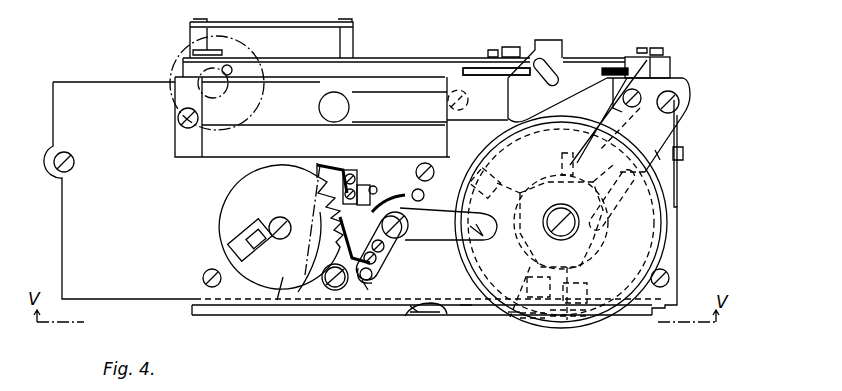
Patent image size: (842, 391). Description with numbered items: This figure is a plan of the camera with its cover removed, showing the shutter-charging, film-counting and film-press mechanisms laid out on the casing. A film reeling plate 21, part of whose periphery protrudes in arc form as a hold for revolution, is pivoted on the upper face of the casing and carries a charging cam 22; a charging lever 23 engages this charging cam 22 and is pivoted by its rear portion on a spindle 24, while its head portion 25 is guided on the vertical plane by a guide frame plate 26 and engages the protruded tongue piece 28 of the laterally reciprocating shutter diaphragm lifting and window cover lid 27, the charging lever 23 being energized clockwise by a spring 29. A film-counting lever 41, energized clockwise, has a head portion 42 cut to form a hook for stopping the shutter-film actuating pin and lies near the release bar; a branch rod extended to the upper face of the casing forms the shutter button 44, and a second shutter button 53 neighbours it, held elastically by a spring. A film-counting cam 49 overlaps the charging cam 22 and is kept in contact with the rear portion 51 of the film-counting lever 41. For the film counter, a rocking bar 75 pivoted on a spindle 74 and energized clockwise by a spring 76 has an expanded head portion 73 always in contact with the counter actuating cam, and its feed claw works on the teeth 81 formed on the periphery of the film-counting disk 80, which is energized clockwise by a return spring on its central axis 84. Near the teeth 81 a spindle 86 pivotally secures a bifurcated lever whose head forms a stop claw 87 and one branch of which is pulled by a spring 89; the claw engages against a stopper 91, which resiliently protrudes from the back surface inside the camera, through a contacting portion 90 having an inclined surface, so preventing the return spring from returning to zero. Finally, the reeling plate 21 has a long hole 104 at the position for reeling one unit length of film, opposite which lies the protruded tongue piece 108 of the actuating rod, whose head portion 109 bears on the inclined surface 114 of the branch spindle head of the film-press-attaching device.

The film reeling plate 21 is at (642, 265).
The charging cam 22 is at (597, 317).
The charging lever 23 is at (467, 307).
The spindle 24 is at (515, 312).
The head portion 25 is at (680, 80).
The guide frame plate 26 is at (652, 70).
The shutter diaphragm lifting and window cover lid 27 is at (600, 72).
The protruded tongue piece 28 is at (645, 58).
The spring 29 is at (676, 142).
The film-counting lever 41 is at (662, 158).
The head portion 42 is at (665, 52).
The shutter button 44 is at (517, 87).
The film-counting cam 49 is at (600, 248).
The rear portion 51 is at (600, 230).
The shutter button 53 is at (553, 62).
The expanded head portion 73 is at (478, 230).
The spindle 74 is at (393, 238).
The rocking bar 75 is at (422, 233).
The spring 76 is at (365, 292).
The film-counting disk 80 is at (283, 277).
The teeth 81 is at (300, 293).
The central axis 84 is at (257, 210).
The spindle 86 is at (333, 290).
The stop claw 87 is at (318, 168).
The spring 89 is at (400, 198).
The contacting portion 90 is at (358, 183).
The stopper 91 is at (373, 188).
The long hole 104 is at (567, 318).
The protruded tongue piece 108 is at (532, 320).
The head portion 109 is at (440, 317).
The inclined surface 114 is at (410, 306).